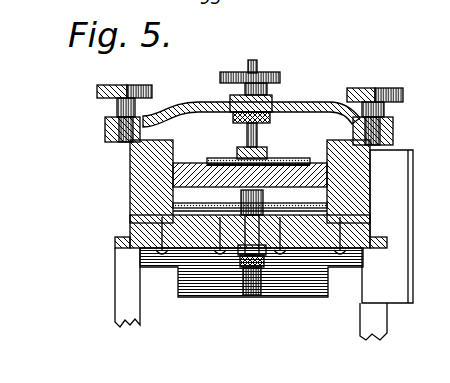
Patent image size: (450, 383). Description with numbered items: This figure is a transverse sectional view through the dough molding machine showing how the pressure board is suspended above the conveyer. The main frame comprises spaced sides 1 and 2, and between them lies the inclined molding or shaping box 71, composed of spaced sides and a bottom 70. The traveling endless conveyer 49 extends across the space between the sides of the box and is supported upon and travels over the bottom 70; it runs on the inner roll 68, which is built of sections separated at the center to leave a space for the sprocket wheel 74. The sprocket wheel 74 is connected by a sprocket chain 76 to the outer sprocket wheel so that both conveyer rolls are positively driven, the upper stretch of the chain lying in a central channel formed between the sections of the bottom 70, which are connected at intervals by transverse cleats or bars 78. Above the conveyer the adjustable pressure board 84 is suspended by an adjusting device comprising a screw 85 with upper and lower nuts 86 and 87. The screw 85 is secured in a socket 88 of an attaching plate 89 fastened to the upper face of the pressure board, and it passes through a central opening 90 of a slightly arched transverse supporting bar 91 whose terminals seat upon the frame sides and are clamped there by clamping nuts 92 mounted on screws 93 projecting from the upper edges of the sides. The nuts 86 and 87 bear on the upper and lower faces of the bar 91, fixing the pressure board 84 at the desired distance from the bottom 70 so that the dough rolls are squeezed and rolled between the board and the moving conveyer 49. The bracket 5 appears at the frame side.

The side 1 is at (115, 290).
The side 2 is at (388, 325).
The bracket 5 is at (414, 265).
The traveling endless conveyer 49 is at (200, 210).
The inner roll 68 is at (195, 272).
The bottom 70 is at (170, 255).
The molding or shaping box 71 is at (150, 185).
The sprocket wheel 74 is at (254, 290).
The sprocket chain 76 is at (252, 215).
The transverse cleats or bars 78 is at (240, 248).
The pressure board 84 is at (197, 164).
The screw 85 is at (255, 65).
The upper nut 86 is at (225, 75).
The lower nut 87 is at (233, 120).
The socket 88 is at (265, 160).
The attaching plate 89 is at (285, 164).
The central opening 90 is at (272, 100).
The transverse supporting bar 91 is at (213, 106).
The clamping nut 92 is at (113, 85).
The screw 93 is at (108, 112).